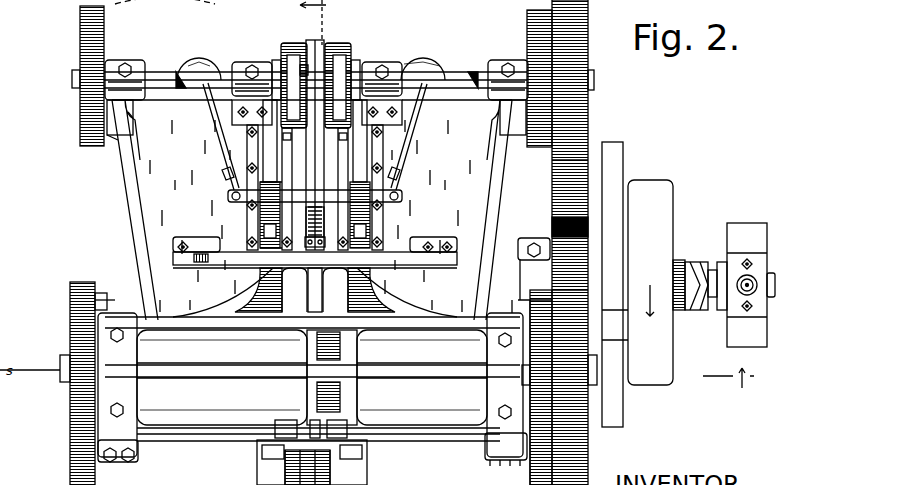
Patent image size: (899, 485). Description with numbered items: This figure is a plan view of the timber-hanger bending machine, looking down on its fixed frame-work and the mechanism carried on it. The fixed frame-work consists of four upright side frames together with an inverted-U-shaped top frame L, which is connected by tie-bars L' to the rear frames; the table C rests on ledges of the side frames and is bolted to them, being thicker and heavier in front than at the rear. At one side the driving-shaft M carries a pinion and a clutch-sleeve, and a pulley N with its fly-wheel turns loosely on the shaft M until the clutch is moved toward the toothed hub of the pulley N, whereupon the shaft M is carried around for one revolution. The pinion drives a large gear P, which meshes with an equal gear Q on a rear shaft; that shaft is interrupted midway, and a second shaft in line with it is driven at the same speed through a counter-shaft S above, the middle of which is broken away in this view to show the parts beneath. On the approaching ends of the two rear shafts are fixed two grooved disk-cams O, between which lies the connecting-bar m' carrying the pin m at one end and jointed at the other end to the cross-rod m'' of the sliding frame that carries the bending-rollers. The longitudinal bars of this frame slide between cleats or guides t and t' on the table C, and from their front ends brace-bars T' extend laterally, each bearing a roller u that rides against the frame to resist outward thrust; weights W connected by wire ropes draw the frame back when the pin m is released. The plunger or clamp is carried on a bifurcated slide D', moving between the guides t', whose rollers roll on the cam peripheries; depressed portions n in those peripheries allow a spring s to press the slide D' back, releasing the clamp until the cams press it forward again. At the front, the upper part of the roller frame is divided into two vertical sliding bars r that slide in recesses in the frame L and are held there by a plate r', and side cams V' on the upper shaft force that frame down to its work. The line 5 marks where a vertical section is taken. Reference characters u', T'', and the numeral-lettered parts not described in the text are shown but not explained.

The counter-shaft S is at (176, 72).
The weight W is at (214, 62).
The disk-cam O is at (314, 22).
The cross-head or pin m is at (306, 62).
The connecting-bar m' is at (314, 93).
The depressed cam portion n is at (316, 85).
The roller u is at (219, 136).
The link u' is at (410, 136).
The cleat or guide t is at (315, 187).
The cleat or guide t' is at (317, 175).
The brace-bar T' is at (315, 215).
The bracket T'' is at (315, 277).
The table C is at (312, 206).
The tie-bar L' is at (312, 210).
The slide D' is at (313, 145).
The spring s is at (324, 214).
The cross-rod m'' is at (320, 203).
The pulley N is at (637, 282).
The driving-shaft M is at (775, 284).
The large gear P is at (590, 446).
The gear Q is at (585, 52).
The top frame L is at (310, 385).
The vertical sliding bar r is at (311, 429).
The plate r' is at (313, 430).
The side cam V' is at (312, 462).
The section line 5 is at (733, 378).